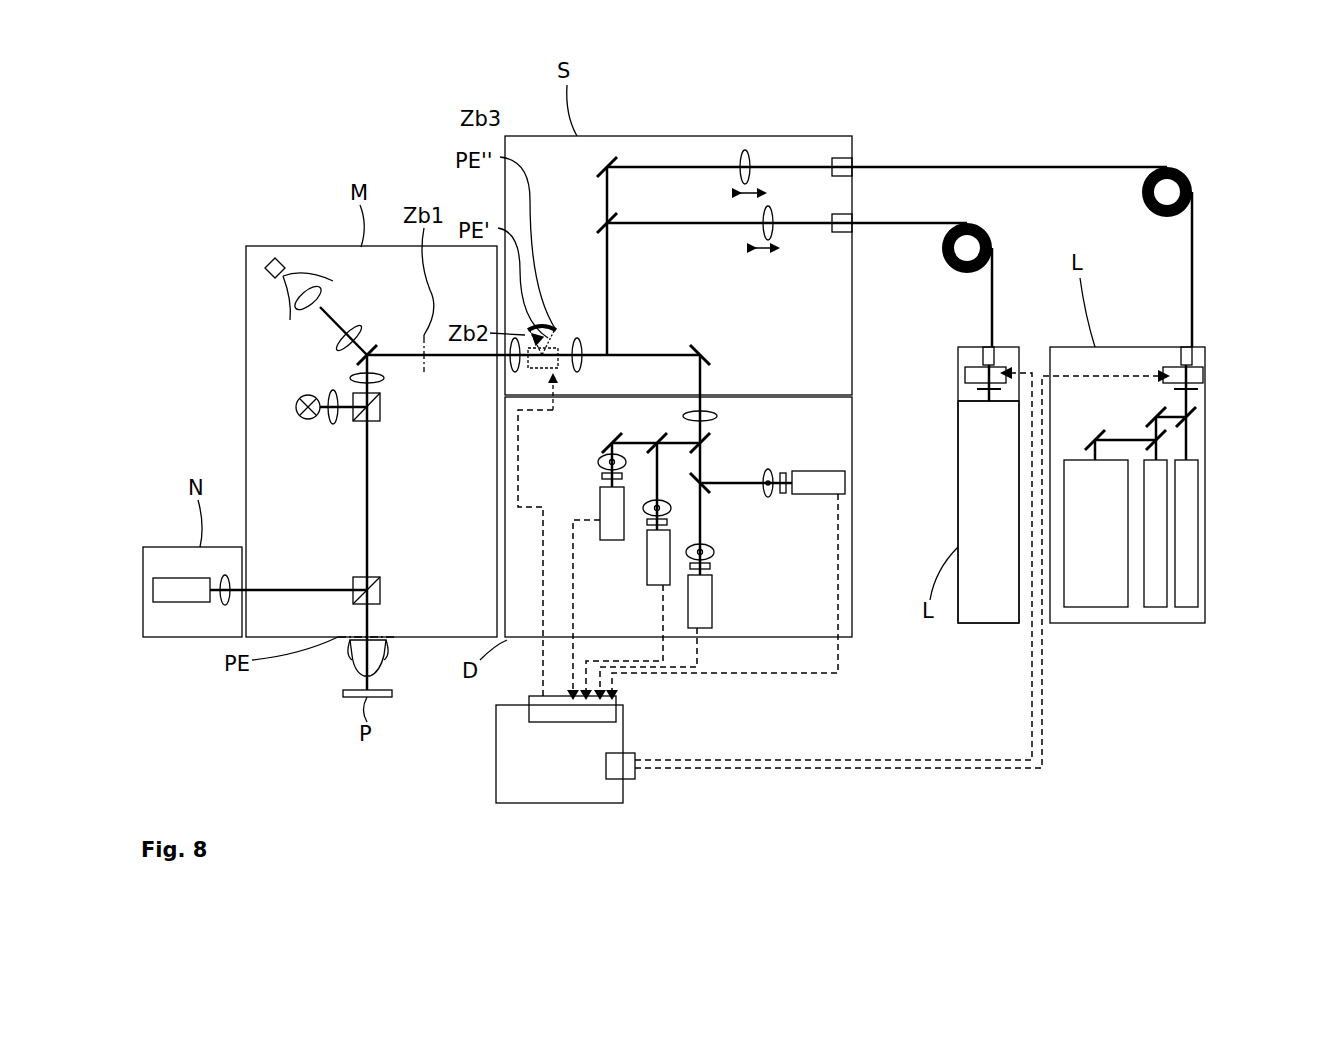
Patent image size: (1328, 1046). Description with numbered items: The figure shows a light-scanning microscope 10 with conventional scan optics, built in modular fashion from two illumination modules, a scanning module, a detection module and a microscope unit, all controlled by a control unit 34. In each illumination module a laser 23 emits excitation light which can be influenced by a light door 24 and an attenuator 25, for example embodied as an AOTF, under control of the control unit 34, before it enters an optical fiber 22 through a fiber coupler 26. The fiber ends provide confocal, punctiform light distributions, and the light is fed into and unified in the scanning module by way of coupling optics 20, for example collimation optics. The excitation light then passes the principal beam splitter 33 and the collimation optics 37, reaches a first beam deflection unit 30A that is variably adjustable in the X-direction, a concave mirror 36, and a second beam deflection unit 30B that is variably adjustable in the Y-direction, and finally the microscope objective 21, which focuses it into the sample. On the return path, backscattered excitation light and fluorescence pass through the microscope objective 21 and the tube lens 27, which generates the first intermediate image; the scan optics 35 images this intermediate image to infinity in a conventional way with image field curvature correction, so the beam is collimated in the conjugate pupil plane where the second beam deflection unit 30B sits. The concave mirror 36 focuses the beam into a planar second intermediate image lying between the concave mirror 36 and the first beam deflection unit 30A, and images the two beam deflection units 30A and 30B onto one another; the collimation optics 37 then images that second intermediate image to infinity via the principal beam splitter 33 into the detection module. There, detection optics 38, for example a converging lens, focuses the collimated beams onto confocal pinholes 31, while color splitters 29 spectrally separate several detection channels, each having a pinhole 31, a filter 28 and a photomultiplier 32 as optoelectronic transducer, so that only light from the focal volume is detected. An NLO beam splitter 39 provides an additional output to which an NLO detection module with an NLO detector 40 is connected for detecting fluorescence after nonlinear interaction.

The light-scanning microscope 10 is at (248, 145).
The coupling optics 20 is at (768, 205).
The microscope objective 21 is at (348, 650).
The optical fiber 22 is at (907, 223).
The laser 23 is at (1188, 472).
The light door 24 is at (978, 389).
The attenuator 25 is at (967, 375).
The fiber coupler 26 is at (842, 158).
The tube lens 27 is at (355, 378).
The filter 28 is at (645, 522).
The color splitter 29 is at (663, 433).
The first beam deflection unit 30A is at (545, 385).
The second beam deflection unit 30B is at (552, 368).
The pinhole 31 is at (657, 500).
The photomultiplier 32 is at (612, 542).
The principal beam splitter 33 is at (612, 358).
The control unit 34 is at (571, 766).
The scan optics 35 is at (512, 362).
The concave mirror 36 is at (535, 322).
The collimation optics 37 is at (578, 340).
The detection optics 38 is at (717, 416).
The NLO beam splitter 39 is at (381, 590).
The NLO detector 40 is at (172, 602).